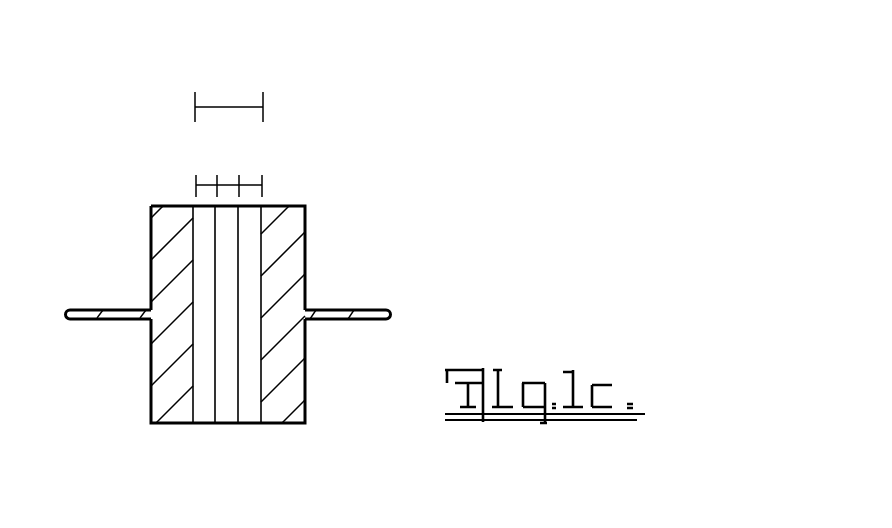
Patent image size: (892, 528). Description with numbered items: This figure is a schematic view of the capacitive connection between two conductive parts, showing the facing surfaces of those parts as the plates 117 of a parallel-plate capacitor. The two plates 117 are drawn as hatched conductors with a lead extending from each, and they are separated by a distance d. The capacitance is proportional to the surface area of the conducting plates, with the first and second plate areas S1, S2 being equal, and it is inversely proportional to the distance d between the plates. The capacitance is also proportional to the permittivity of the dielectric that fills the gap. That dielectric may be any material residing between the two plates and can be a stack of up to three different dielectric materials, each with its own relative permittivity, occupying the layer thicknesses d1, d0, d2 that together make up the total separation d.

The plates of a capacitor 117 is at (408, 174).
The surface area of the first conducting plate S1 is at (151, 257).
The surface area of the second conducting plate S2 is at (304, 241).
The distance separating the plates d is at (229, 92).
The thickness of the first dielectric layer d1 is at (200, 170).
The thickness of the middle dielectric layer d0 is at (224, 170).
The thickness of the third dielectric layer d2 is at (250, 170).